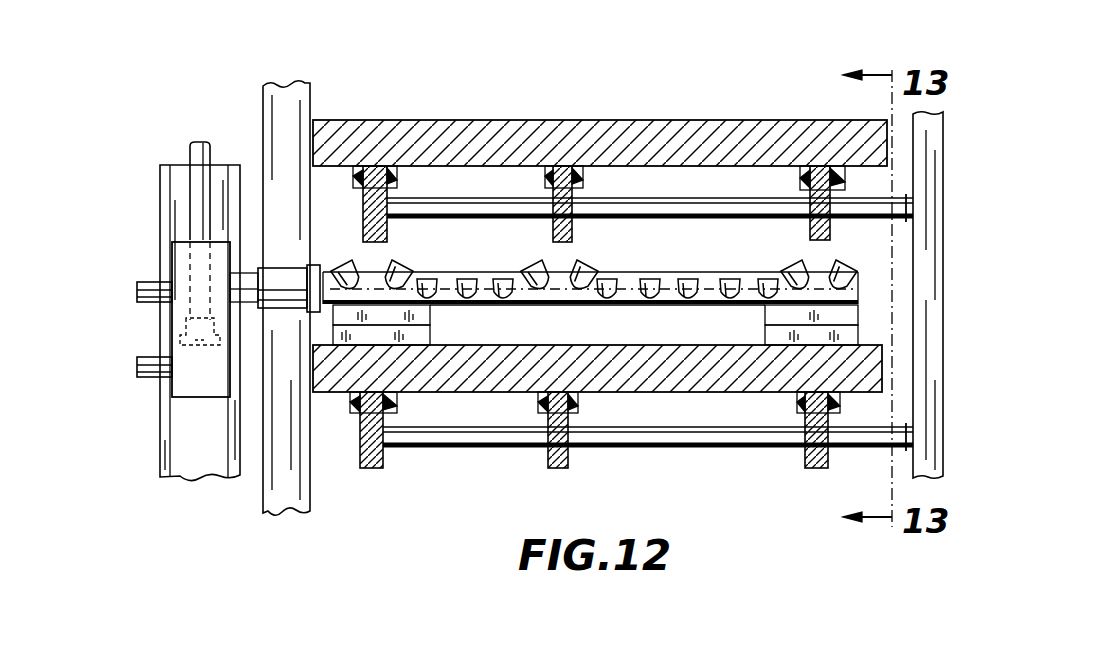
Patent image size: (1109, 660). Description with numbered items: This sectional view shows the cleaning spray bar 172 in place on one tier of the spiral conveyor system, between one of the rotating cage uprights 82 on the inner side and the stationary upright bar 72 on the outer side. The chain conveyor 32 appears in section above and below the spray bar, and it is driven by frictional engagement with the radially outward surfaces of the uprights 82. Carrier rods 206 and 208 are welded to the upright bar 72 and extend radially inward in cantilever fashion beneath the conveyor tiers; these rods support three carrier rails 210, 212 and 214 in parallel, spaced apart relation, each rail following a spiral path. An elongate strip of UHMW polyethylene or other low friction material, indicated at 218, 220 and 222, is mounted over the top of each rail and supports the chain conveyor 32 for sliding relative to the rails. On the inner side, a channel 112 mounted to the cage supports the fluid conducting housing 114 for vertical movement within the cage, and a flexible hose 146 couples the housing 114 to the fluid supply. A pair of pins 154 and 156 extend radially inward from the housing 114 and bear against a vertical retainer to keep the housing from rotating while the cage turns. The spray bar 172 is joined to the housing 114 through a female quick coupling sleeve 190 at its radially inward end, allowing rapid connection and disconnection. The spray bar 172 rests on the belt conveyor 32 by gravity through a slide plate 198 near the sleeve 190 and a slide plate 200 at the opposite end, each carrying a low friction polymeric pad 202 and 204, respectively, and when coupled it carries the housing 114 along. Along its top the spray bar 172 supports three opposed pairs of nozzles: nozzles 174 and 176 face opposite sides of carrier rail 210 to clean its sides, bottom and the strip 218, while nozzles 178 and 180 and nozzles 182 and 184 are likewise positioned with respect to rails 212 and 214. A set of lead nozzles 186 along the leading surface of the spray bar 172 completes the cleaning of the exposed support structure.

The chain conveyor 32 is at (527, 120).
The upright bar 72 is at (915, 277).
The uprights 82 is at (282, 100).
The channel 112 is at (180, 195).
The fluid conducting housing 114 is at (203, 387).
The flexible hose 146 is at (196, 155).
The pin 154 is at (148, 285).
The pin 156 is at (148, 372).
The spray bar 172 is at (700, 268).
The nozzle 174 is at (345, 266).
The nozzle 176 is at (399, 266).
The nozzle 178 is at (533, 266).
The nozzle 180 is at (586, 266).
The nozzle 182 is at (792, 266).
The nozzle 184 is at (843, 266).
The lead nozzles 186 is at (467, 280).
The sleeve 190 is at (283, 268).
The slide plate 198 is at (430, 315).
The slide plate 200 is at (782, 312).
The polymeric pad 202 is at (418, 338).
The polymeric pad 204 is at (785, 336).
The carrier rod 206 is at (693, 206).
The carrier rod 208 is at (710, 449).
The carrier rail 210 is at (370, 207).
The carrier rail 212 is at (556, 195).
The carrier rail 214 is at (835, 200).
The low friction strip 218 is at (400, 178).
The low friction strip 220 is at (585, 180).
The low friction strip 222 is at (803, 183).